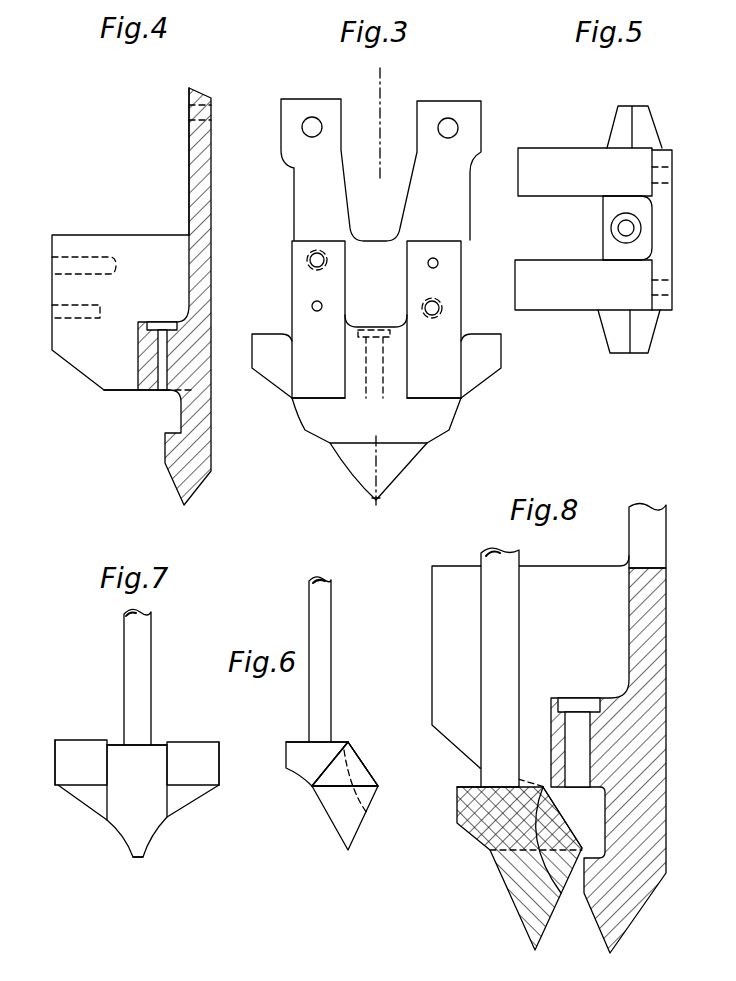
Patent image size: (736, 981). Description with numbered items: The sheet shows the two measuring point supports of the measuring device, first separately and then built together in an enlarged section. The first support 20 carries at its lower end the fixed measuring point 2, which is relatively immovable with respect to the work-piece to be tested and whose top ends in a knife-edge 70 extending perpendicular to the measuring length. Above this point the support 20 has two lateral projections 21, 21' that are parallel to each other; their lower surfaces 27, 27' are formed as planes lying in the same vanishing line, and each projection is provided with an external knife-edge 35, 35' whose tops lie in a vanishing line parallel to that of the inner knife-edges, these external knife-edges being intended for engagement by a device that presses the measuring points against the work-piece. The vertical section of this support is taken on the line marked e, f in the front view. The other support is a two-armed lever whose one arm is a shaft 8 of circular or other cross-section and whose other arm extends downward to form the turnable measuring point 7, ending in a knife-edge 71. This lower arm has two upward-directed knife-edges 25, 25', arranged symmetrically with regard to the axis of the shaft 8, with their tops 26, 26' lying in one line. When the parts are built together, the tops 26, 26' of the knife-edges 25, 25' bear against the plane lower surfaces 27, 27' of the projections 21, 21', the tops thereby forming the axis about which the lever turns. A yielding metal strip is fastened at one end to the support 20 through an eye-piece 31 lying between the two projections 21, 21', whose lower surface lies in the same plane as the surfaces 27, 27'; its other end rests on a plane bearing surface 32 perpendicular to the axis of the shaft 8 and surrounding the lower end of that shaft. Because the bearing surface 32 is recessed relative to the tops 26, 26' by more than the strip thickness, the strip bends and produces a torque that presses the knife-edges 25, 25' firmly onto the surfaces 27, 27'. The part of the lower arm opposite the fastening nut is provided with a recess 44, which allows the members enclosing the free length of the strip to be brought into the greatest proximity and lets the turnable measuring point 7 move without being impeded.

In FIG. 4, the measuring point 2 is at (197, 457).
In FIG. 3, the measuring point 2 is at (402, 456).
In FIG. 8, the measuring point 2 is at (627, 912).
In FIG. 4, the support 20 is at (160, 230).
In FIG. 3, the support 20 is at (358, 245).
In FIG. 5, the support 20 is at (598, 325).
In FIG. 8, the support 20 is at (638, 613).
In FIG. 4, the lateral projection 21 is at (120, 296).
In FIG. 3, the lateral projection 21 is at (297, 319).
In FIG. 5, the lateral projection 21 is at (585, 156).
In FIG. 8, the lateral projection 21 is at (530, 671).
In FIG. 3, the lateral projection 21' is at (456, 319).
In FIG. 5, the lateral projection 21' is at (583, 304).
In FIG. 4, the external knife-edge 35 is at (140, 356).
In FIG. 3, the external knife-edge 35 is at (259, 366).
In FIG. 5, the external knife-edge 35 is at (651, 127).
In FIG. 3, the external knife-edge 35' is at (496, 366).
In FIG. 5, the external knife-edge 35' is at (648, 337).
In FIG. 4, the lower surface 27 is at (136, 406).
In FIG. 3, the lower surface 27 is at (297, 415).
In FIG. 8, the lower surface 27 is at (552, 798).
In FIG. 3, the lower surface 27' is at (454, 416).
In FIG. 3, the knife-edge 70 is at (375, 502).
In FIG. 7, the measuring point 7 is at (145, 838).
In FIG. 6, the measuring point 7 is at (338, 818).
In FIG. 8, the measuring point 7 is at (523, 915).
In FIG. 7, the shaft 8 is at (131, 642).
In FIG. 6, the shaft 8 is at (312, 624).
In FIG. 8, the shaft 8 is at (505, 628).
In FIG. 7, the knife-edge 25 is at (62, 762).
In FIG. 6, the knife-edge 25 is at (376, 764).
In FIG. 7, the knife-edge 25' is at (213, 763).
In FIG. 6, the knife-edge 25' is at (347, 764).
In FIG. 7, the top of knife-edge 26 is at (71, 746).
In FIG. 6, the top of knife-edge 26 is at (364, 745).
In FIG. 7, the top of knife-edge 26' is at (207, 746).
In FIG. 6, the top of knife-edge 26' is at (340, 756).
In FIG. 7, the bearing surface 32 is at (117, 743).
In FIG. 6, the bearing surface 32 is at (292, 744).
In FIG. 8, the bearing surface 32 is at (467, 790).
In FIG. 7, the knife-edge 71 is at (138, 860).
In FIG. 8, the eye-piece 31 is at (555, 725).
In FIG. 8, the recess 44 is at (540, 860).
In FIG. 3, the section line e is at (388, 121).
In FIG. 3, the section line f is at (372, 489).